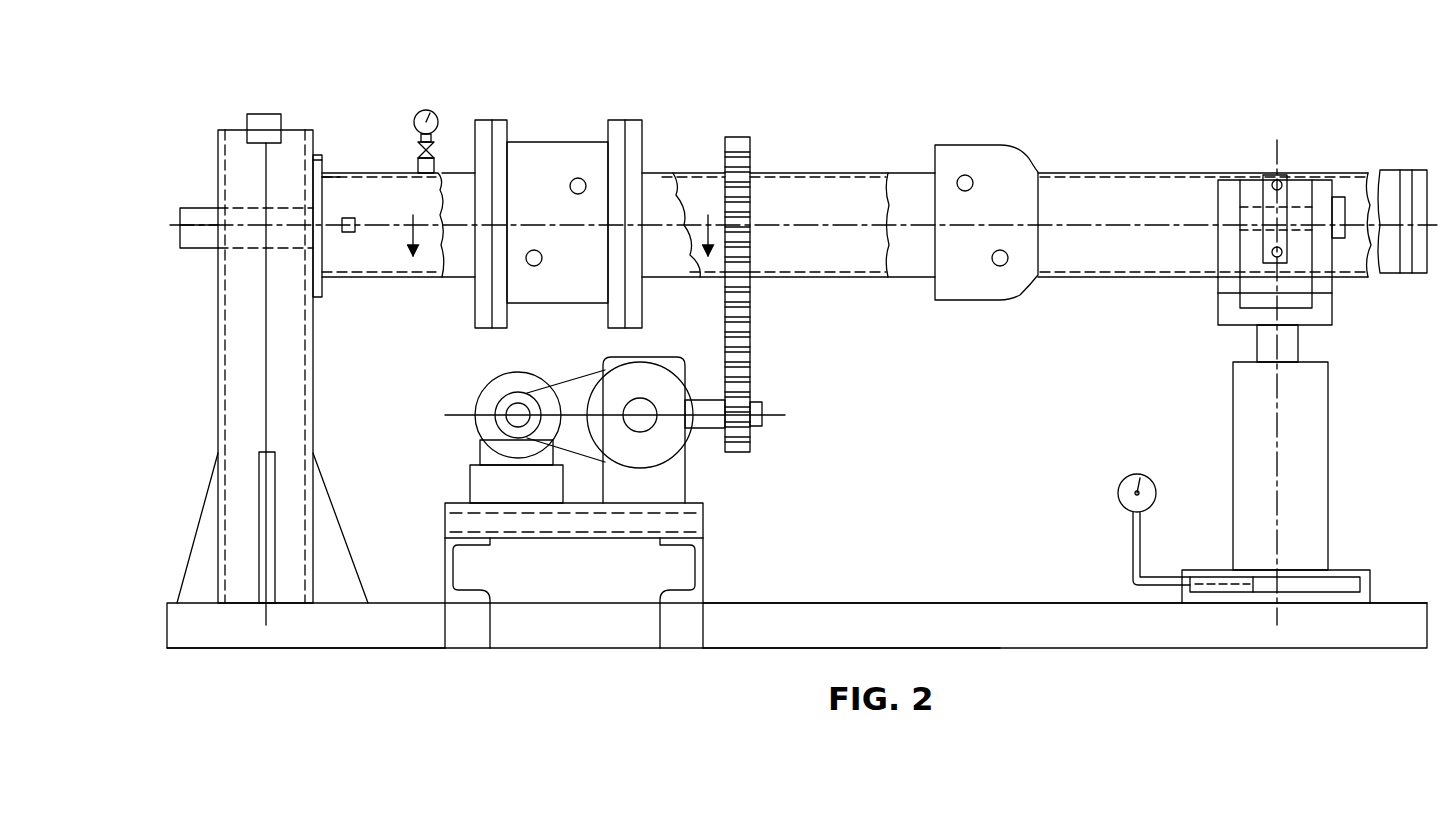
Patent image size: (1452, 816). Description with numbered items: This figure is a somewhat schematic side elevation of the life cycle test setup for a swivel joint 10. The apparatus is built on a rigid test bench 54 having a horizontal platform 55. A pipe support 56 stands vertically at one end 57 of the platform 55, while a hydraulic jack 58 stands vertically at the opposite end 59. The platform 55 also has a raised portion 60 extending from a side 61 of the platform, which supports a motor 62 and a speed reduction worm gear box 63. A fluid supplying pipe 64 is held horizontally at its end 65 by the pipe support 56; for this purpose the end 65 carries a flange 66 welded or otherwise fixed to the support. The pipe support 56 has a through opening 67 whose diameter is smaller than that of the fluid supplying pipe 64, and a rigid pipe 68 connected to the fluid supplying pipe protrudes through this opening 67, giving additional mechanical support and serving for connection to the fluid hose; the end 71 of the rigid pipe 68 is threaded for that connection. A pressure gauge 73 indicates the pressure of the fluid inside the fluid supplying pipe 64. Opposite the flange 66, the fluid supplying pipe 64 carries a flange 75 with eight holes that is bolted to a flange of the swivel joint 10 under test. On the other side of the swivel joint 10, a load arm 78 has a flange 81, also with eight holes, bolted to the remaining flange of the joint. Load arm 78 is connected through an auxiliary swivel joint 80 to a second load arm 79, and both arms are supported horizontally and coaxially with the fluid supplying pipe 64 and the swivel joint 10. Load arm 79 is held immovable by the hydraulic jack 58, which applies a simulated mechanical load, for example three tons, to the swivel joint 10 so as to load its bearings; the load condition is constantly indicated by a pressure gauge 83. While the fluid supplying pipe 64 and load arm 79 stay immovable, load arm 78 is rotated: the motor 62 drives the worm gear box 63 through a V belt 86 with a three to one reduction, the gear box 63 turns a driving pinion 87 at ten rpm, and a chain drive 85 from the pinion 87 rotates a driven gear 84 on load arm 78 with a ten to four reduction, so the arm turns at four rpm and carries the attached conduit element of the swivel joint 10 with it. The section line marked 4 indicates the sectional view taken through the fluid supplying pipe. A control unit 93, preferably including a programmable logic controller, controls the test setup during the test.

The section line 4- 4 is at (559, 219).
The swivel joint 10 is at (572, 150).
The rigid test bench 54 is at (436, 658).
The horizontal platform 55 is at (1038, 620).
The pipe support 56 is at (247, 372).
The end of the platform 57 is at (240, 633).
The hydraulic jack 58 is at (1307, 500).
The opposite end of the platform 59 is at (1390, 625).
The raised portion 60 is at (708, 525).
The side of the platform 61 is at (765, 620).
The motor 62 is at (482, 435).
The speed reduction worm gear box 63 is at (630, 490).
The fluid supplying pipe 64 is at (387, 195).
The end of the fluid supplying pipe 65 is at (330, 197).
The flange 66 is at (316, 155).
The through opening 67 is at (316, 207).
The rigid pipe 68 is at (204, 250).
The end of the rigid pipe 71 is at (192, 242).
The pressure gauge 73 is at (430, 110).
The flange 75 is at (483, 128).
The load arm 78 is at (907, 178).
The load arm 79 is at (1103, 182).
The auxiliary swivel joint 80 is at (990, 180).
The flange 81 is at (632, 130).
The pressure gauge 83 is at (1118, 492).
The gear 84 is at (760, 200).
The chain drive 85 is at (745, 325).
The V belt 86 is at (573, 423).
The driving pinion 87 is at (713, 430).
The control unit 93 is at (273, 108).